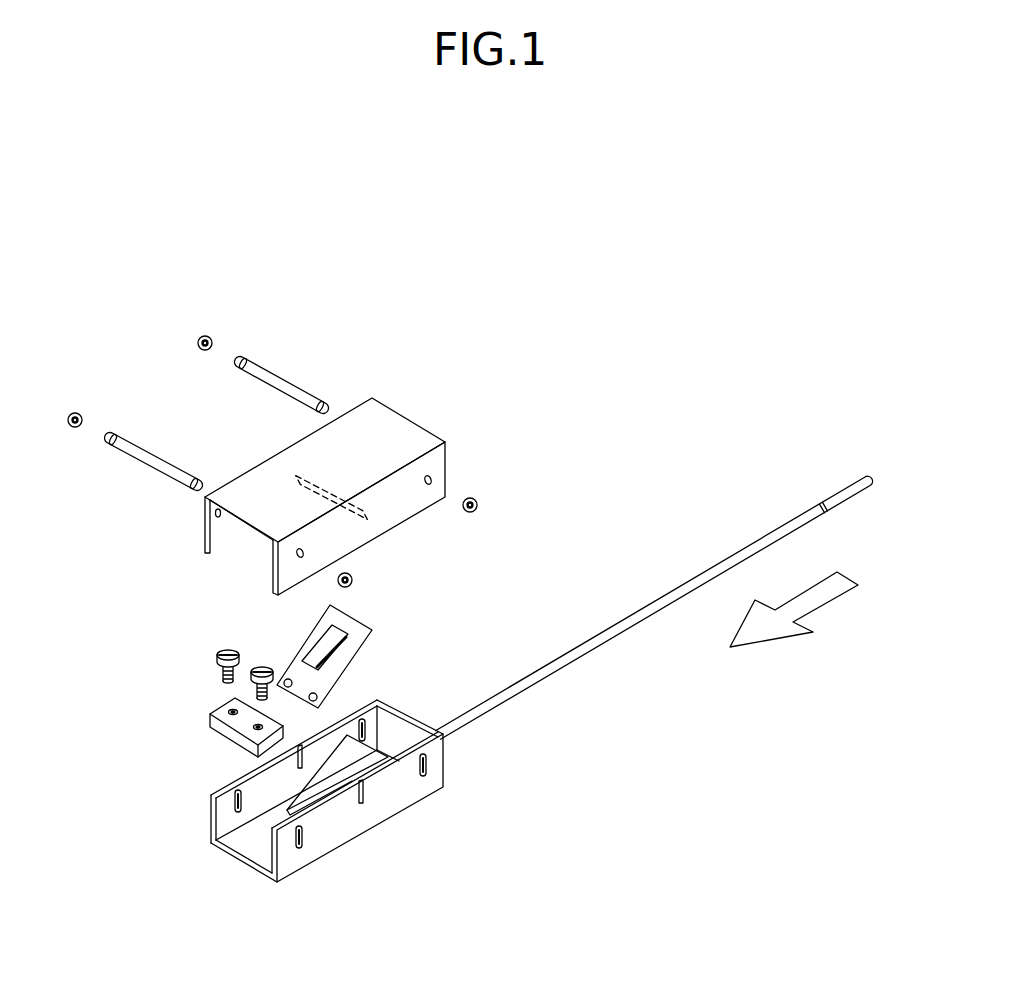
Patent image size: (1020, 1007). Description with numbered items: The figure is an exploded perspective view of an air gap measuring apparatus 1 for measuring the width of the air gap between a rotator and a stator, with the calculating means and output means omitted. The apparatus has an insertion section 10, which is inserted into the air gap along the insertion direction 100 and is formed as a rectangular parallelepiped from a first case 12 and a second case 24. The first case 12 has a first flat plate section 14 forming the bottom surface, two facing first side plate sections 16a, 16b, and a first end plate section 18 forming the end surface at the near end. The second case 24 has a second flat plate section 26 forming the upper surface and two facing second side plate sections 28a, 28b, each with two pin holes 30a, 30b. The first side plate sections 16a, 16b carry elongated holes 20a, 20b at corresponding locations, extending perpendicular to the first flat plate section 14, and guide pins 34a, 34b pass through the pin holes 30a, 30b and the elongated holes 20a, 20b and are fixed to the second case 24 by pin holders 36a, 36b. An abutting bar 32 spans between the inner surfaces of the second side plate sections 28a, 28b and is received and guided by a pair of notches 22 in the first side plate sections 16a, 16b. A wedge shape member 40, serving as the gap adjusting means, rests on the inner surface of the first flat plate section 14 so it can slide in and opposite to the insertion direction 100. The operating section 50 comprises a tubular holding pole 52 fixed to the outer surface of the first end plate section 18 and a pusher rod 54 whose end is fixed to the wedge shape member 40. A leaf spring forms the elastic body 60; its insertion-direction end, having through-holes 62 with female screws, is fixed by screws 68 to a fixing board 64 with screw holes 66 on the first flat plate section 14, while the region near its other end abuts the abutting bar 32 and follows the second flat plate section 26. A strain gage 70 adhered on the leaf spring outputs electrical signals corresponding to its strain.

The air gap measuring apparatus 1 is at (447, 229).
The insertion section 10 is at (427, 907).
The first case 12 is at (342, 860).
The first flat plate section 14 is at (254, 858).
The first side plate section 16a is at (354, 826).
The first side plate section 16b is at (211, 808).
The first end plate section 18 is at (415, 718).
The elongated hole 20a is at (233, 812).
The elongated hole 20b is at (367, 721).
The notch 22 is at (300, 744).
The second case 24 is at (373, 394).
The second flat plate section 26 is at (368, 432).
The second side plate section 28a is at (408, 507).
The second side plate section 28b is at (204, 553).
The pin hole 30a is at (214, 518).
The pin hole 30b is at (432, 478).
The abutting bar 32 is at (333, 492).
The guide pin 34a is at (154, 460).
The guide pin 34b is at (288, 384).
The pin holder 36a is at (76, 412).
The pin holder 36b is at (206, 336).
The wedge shape member 40 is at (396, 763).
The operating section 50 is at (722, 546).
The holding pole 52 is at (653, 615).
The pusher rod 54 is at (840, 492).
The elastic body 60 is at (338, 660).
The through-hole 62 is at (281, 678).
The fixing board 64 is at (237, 735).
The screw hole 66 is at (228, 708).
The screw 68 is at (217, 652).
The strain gage 70 is at (339, 630).
The insertion direction 100 is at (823, 607).